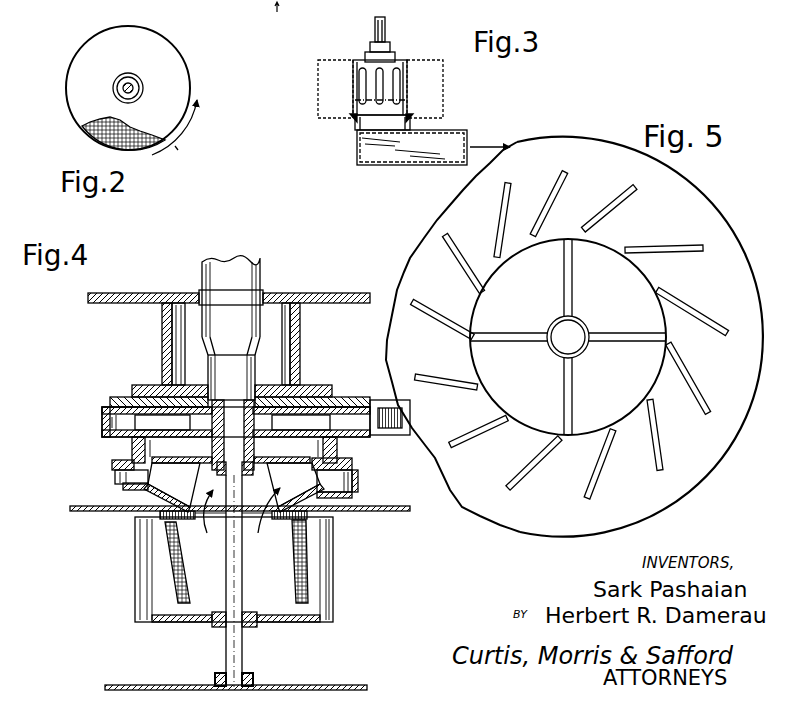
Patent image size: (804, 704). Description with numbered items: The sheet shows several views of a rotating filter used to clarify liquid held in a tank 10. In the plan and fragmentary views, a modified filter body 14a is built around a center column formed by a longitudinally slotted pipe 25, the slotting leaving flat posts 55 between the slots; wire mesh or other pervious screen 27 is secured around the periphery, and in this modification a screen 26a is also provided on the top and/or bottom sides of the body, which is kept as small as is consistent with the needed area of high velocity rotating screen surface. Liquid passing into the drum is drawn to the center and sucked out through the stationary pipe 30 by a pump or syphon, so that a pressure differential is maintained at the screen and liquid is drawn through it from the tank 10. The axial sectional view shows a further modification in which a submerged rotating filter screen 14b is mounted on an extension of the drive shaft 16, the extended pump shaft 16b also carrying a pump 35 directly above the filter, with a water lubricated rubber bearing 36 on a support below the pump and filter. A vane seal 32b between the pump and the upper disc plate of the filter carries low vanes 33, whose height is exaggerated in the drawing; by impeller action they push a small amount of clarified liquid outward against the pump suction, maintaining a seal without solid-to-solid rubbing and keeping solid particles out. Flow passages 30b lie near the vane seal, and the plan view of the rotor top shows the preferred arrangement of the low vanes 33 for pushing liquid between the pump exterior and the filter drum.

In FIG. 4, the tank 10 is at (322, 684).
In FIG. 2, the filter body 14a is at (66, 123).
In FIG. 3, the filter body 14a is at (365, 79).
In FIG. 4, the submerged rotating filter screen 14b is at (268, 569).
In FIG. 2, the drive shaft 16 is at (131, 83).
In FIG. 3, the drive shaft 16 is at (384, 24).
In FIG. 4, the drive shaft 16 is at (248, 378).
In FIG. 4, the extended pump shaft 16b is at (238, 580).
In FIG. 3, the pipe 25 is at (384, 74).
In FIG. 3, the screen 26a is at (352, 62).
In FIG. 3, the screen 27 is at (442, 86).
In FIG. 3, the pipe 30 is at (460, 133).
In FIG. 4, the guide vanes 30b is at (207, 506).
In FIG. 4, the vane seal 32b is at (395, 516).
In FIG. 5, the vanes 33 is at (606, 207).
In FIG. 4, the vanes 33 is at (288, 518).
In FIG. 4, the pump 35 is at (392, 462).
In FIG. 4, the bearing 36 is at (256, 680).
In FIG. 3, the flat posts 55 is at (364, 92).